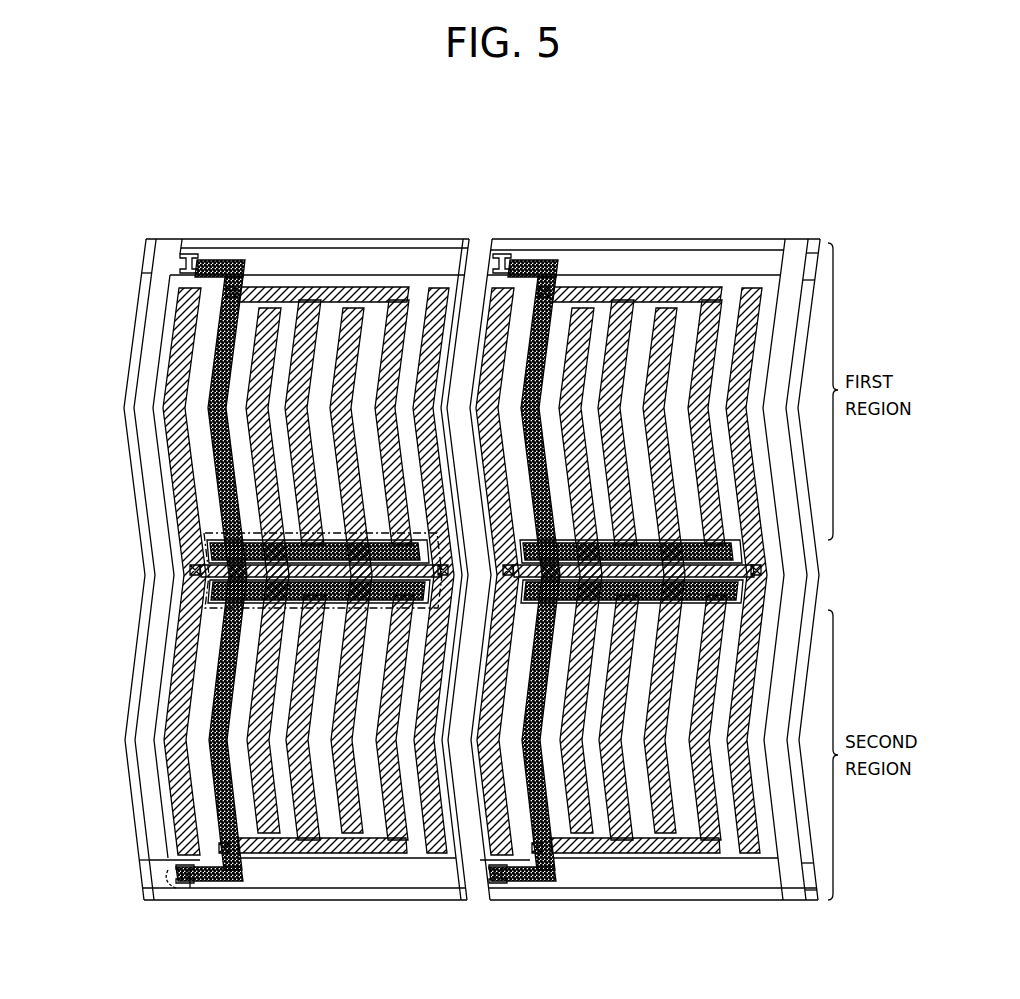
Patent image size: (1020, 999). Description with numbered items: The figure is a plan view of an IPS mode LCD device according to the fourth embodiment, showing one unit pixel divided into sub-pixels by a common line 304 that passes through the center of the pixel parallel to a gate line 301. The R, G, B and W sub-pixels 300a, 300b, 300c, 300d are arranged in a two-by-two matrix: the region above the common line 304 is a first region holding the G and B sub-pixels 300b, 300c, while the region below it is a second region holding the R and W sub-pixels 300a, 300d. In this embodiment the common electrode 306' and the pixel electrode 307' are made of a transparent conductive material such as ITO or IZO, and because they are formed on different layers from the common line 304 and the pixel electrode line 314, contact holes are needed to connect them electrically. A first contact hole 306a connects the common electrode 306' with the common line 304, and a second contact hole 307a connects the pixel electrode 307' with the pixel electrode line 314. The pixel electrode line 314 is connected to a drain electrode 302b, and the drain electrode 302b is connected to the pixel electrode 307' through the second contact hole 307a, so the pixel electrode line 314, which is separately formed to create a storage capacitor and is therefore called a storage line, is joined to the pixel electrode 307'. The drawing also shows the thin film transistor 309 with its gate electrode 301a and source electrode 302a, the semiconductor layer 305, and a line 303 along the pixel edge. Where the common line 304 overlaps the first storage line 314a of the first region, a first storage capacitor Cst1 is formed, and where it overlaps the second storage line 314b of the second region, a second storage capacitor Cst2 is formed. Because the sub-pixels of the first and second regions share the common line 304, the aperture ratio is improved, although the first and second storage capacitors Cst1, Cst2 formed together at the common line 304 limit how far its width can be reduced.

The R sub-pixel 300a is at (370, 913).
The G sub-pixel 300b is at (385, 225).
The B sub-pixel 300c is at (652, 225).
The W sub-pixel 300d is at (672, 913).
The gate line 301 is at (290, 878).
The gate electrode 301a is at (185, 857).
The source electrode 302a is at (180, 873).
The drain electrode 302b is at (205, 878).
The common line 303 is at (148, 760).
The common line 304 is at (178, 543).
The semiconductor layer 305 is at (190, 888).
The common electrode 306' is at (350, 520).
The first contact hole 306a is at (192, 571).
The pixel electrode 307' is at (326, 520).
The second contact hole 307a is at (243, 262).
The thin film transistor 309 is at (175, 880).
The pixel electrode line 314 is at (717, 571).
The first storage line 314a is at (738, 553).
The second storage line 314b is at (738, 590).
The first storage capacitor Cst1 is at (207, 551).
The second storage capacitor Cst2 is at (207, 597).